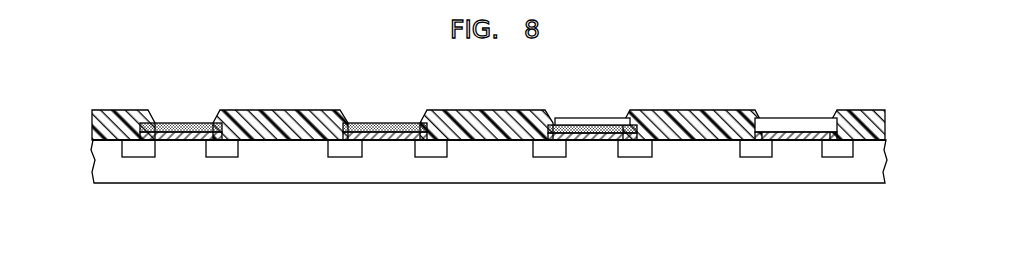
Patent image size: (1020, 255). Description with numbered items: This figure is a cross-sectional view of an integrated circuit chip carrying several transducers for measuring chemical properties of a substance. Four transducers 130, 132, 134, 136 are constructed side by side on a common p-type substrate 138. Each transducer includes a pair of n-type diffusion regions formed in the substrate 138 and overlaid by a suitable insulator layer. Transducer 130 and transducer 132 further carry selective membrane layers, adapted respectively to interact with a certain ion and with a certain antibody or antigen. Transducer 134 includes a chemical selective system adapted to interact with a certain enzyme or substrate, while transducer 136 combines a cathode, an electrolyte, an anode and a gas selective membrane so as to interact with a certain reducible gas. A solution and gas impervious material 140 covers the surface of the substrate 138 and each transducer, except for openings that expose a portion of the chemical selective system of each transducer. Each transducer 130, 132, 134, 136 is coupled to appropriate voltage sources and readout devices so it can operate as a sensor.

The transducer 130 is at (184, 150).
The transducer 132 is at (384, 150).
The transducer 134 is at (592, 150).
The transducer 136 is at (795, 150).
The p-type substrate 138 is at (128, 172).
The solution and gas impervious material 140 is at (150, 108).